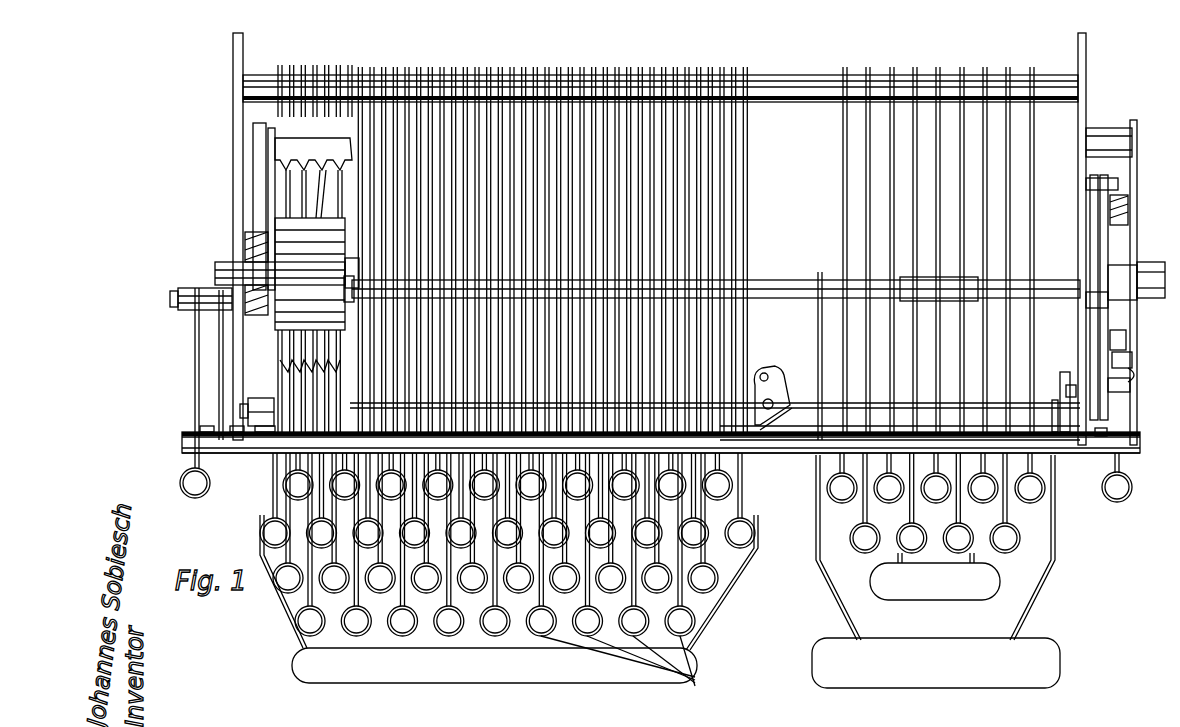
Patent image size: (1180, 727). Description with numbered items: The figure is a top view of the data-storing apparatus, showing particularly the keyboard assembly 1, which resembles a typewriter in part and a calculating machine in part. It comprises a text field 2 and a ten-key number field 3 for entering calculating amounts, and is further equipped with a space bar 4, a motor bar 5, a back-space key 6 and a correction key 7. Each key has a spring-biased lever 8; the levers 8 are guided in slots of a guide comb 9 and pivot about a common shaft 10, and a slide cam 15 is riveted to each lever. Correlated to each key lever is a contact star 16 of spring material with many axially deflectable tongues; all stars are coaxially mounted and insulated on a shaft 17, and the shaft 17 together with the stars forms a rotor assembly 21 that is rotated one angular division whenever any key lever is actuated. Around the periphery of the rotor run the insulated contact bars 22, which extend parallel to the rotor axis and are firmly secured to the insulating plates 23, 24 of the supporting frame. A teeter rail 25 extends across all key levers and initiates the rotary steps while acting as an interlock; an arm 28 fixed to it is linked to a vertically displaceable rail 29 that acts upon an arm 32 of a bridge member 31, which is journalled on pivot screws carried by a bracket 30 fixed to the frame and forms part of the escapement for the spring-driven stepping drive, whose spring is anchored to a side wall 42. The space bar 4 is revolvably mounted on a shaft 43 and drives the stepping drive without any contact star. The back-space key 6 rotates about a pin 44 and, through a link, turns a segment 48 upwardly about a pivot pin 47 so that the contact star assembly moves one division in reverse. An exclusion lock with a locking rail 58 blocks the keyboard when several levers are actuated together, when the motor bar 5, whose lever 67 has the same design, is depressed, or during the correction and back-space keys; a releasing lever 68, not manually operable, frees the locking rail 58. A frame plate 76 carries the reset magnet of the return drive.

The keyboard assembly 1 is at (848, 585).
The text field 2 is at (630, 663).
The number field 3 is at (988, 580).
The space bar 4 is at (310, 666).
The motor bar 5 is at (1040, 660).
The back-space key 6 is at (1130, 500).
The correction key 7 is at (203, 495).
The key lever 8 is at (847, 228).
The guide comb 9 is at (795, 455).
The common shaft 10 is at (788, 93).
The slide cam 15 is at (300, 366).
The contact star 16 is at (300, 212).
The shaft 17 is at (216, 272).
The rotor assembly 21 is at (280, 256).
The contact bars 22 is at (292, 152).
The insulating plate 23 is at (270, 140).
The insulating plate 24 is at (262, 132).
The teeter rail 25 is at (805, 415).
The arm 28 is at (1072, 418).
The vertically displaceable rail 29 is at (1076, 398).
The bracket 30 is at (1128, 302).
The bridge member 31 is at (1130, 365).
The arm 32 is at (1122, 388).
The side wall 42 is at (1082, 62).
The shaft 43 is at (778, 292).
The pin 44 is at (1116, 186).
The pivot pin 47 is at (1110, 142).
The segment 48 is at (1131, 172).
The locking rail 58 is at (190, 436).
The lever 67 is at (1055, 545).
The releasing lever 68 is at (220, 408).
The frame plate 76 is at (235, 65).